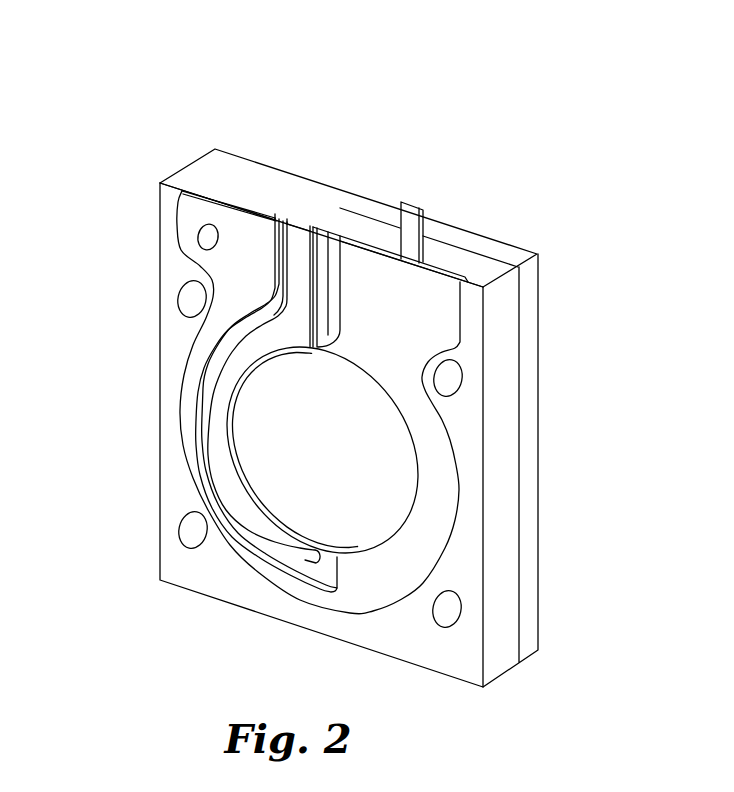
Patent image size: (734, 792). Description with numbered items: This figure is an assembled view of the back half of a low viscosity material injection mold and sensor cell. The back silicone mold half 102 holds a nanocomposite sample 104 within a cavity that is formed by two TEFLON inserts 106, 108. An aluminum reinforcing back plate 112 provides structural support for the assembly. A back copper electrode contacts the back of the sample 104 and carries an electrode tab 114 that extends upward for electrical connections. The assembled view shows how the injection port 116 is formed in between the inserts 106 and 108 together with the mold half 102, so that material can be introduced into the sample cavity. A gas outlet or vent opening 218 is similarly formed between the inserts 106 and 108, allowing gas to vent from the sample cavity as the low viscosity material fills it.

The back silicone mold half 102 is at (340, 238).
The nanocomposite sample 104 is at (348, 457).
The TEFLON insert 106 is at (461, 500).
The TEFLON insert 108 is at (178, 413).
The aluminum reinforcing back plate 112 is at (540, 373).
The electrode tab 114 is at (415, 204).
The injection port 116 is at (292, 218).
The gas outlet or vent opening 218 is at (323, 233).